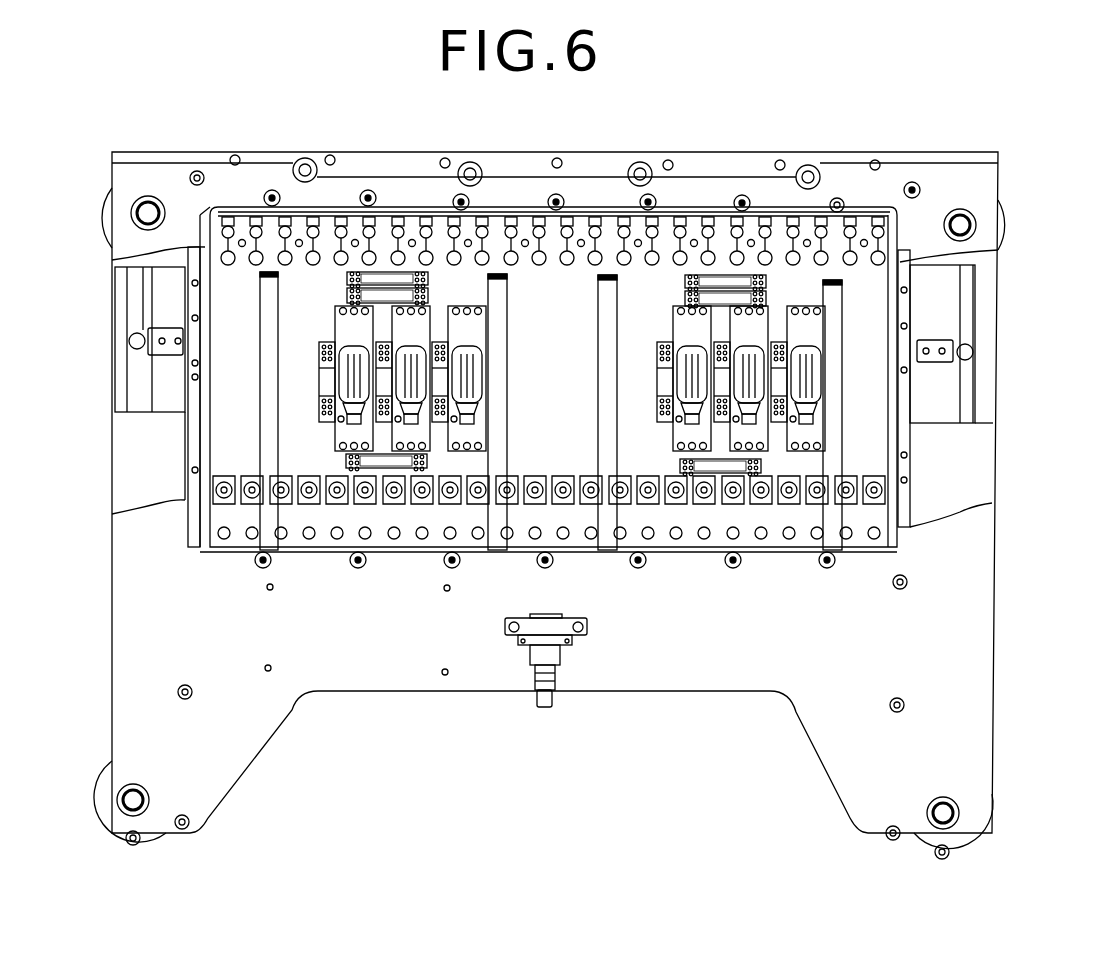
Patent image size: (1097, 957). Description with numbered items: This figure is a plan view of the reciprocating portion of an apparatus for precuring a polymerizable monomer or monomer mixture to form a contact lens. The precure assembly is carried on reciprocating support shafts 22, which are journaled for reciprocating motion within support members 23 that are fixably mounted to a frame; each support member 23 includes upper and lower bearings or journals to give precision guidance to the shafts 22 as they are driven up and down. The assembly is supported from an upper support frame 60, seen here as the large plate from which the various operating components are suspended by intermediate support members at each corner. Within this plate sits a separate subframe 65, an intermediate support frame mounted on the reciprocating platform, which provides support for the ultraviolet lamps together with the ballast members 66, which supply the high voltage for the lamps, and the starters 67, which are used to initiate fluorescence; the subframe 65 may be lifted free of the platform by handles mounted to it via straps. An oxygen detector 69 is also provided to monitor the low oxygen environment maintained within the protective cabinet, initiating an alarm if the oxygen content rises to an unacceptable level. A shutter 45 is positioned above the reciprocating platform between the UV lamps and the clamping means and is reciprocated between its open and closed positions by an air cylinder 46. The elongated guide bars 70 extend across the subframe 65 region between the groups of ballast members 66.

The reciprocating support shaft 22 is at (149, 196).
The support member 23 is at (103, 218).
The shutter 45 is at (203, 380).
The air cylinder 46 is at (933, 345).
The upper support frame 60 is at (836, 677).
The subframe 65 is at (228, 433).
The ballast member 66 is at (695, 374).
The starter 67 is at (265, 505).
The oxygen detector 69 is at (553, 704).
The guide bars 70 is at (262, 298).